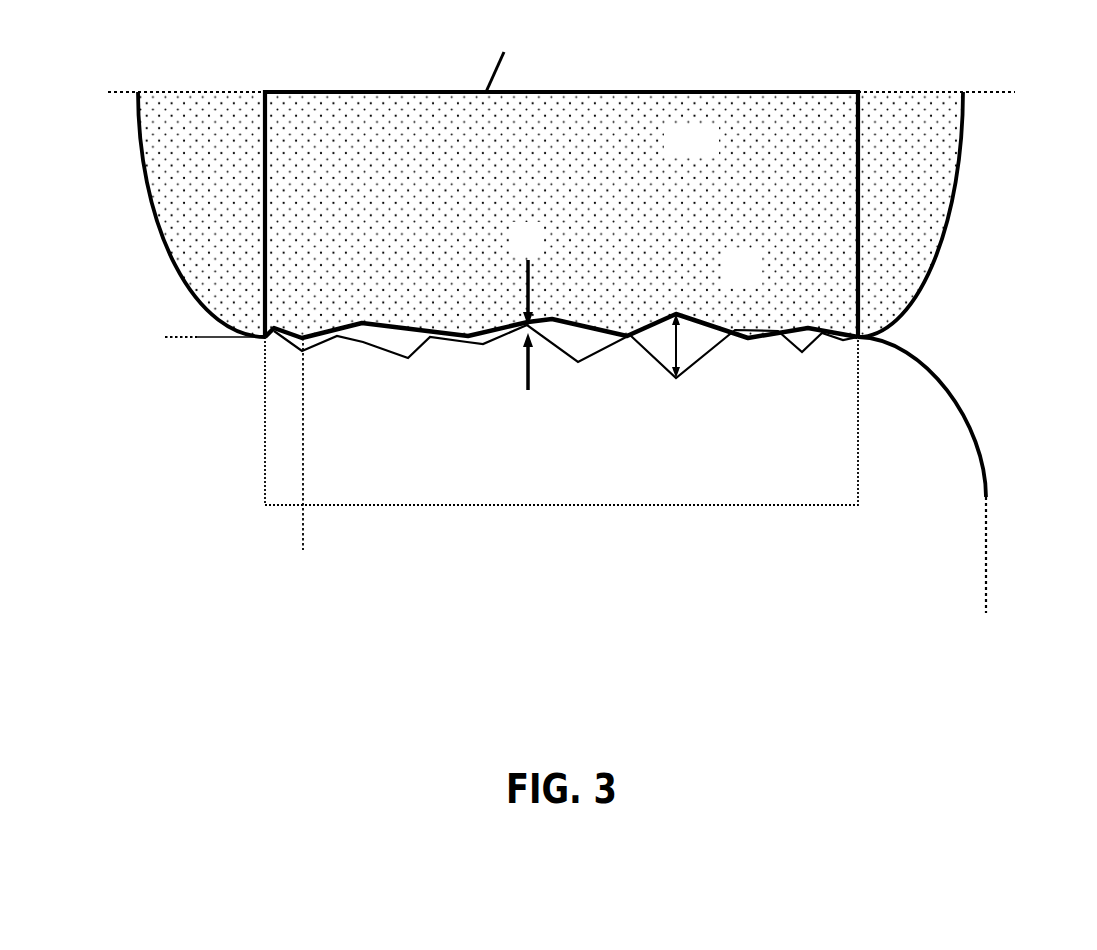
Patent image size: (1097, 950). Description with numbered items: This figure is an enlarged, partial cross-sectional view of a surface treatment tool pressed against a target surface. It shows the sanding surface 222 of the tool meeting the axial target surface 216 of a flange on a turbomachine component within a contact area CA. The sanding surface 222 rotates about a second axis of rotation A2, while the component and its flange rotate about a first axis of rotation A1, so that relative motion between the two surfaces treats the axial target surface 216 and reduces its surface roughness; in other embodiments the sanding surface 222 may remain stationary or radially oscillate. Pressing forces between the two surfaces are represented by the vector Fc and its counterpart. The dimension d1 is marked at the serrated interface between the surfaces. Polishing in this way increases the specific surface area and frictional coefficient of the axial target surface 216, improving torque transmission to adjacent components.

The sanding surface 222 is at (711, 153).
The axial target surface 216 is at (669, 470).
The first axis of rotation A1 is at (304, 465).
The second axis of rotation A2 is at (580, 93).
The contact area CA is at (505, 60).
The pressing force vector Fc is at (530, 325).
The interface depth d1 is at (676, 348).